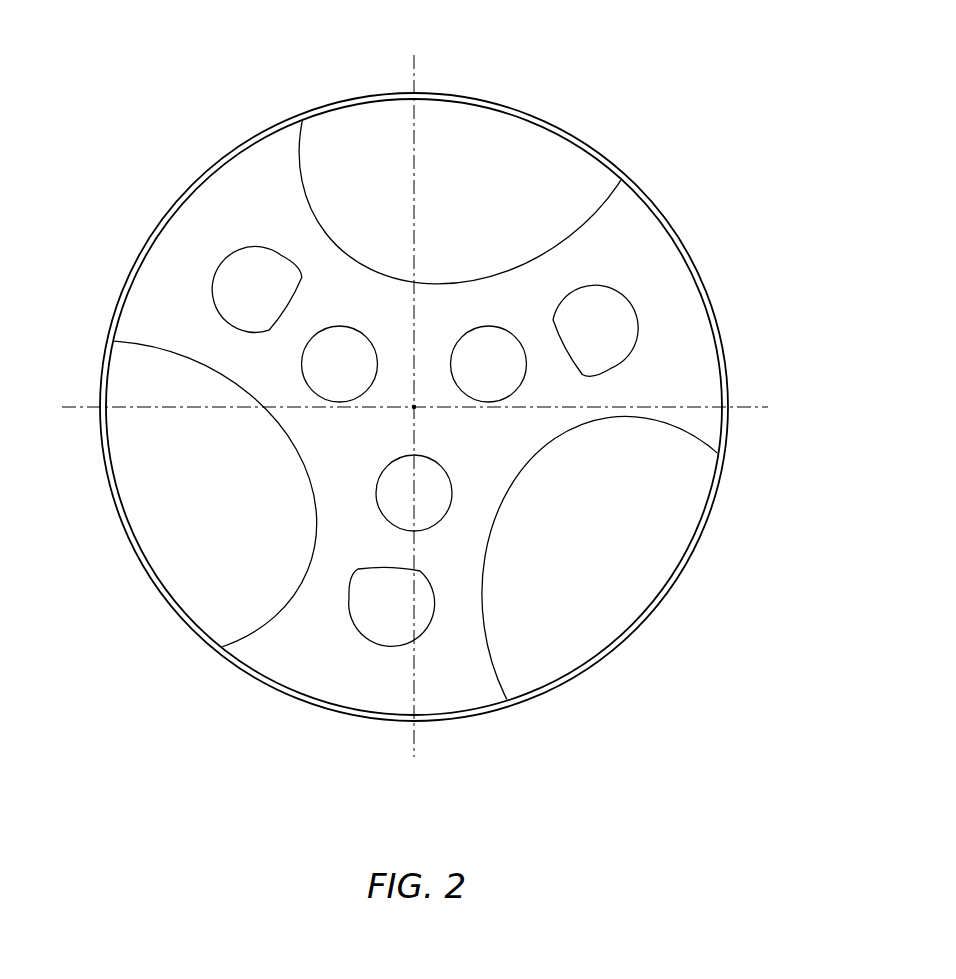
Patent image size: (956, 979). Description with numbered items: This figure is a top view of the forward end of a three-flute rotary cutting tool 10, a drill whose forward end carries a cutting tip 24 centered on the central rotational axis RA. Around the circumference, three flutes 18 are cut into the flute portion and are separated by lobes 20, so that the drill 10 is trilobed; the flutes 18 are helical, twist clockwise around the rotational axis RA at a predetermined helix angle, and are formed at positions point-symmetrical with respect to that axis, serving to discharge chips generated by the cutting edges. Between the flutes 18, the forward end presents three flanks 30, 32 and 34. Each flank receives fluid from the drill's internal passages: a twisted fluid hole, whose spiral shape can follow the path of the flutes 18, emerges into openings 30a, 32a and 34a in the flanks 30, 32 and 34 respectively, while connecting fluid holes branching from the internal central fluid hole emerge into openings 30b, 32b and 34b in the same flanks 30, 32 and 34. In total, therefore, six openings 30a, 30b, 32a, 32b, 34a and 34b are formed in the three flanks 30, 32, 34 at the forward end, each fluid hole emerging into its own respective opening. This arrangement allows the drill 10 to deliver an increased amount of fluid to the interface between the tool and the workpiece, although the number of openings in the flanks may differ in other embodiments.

The rotary cutting tool 10 is at (708, 55).
The flute 18 is at (495, 148).
The lobe 20 is at (177, 203).
The cutting tip 24 is at (413, 407).
The rotational axis RA is at (414, 408).
The flank 30 is at (310, 647).
The opening 30a is at (348, 608).
The opening 30b is at (383, 513).
The flank 32 is at (678, 310).
The opening 32a is at (565, 343).
The opening 32b is at (453, 377).
The flank 34 is at (258, 165).
The opening 34a is at (233, 313).
The opening 34b is at (317, 387).